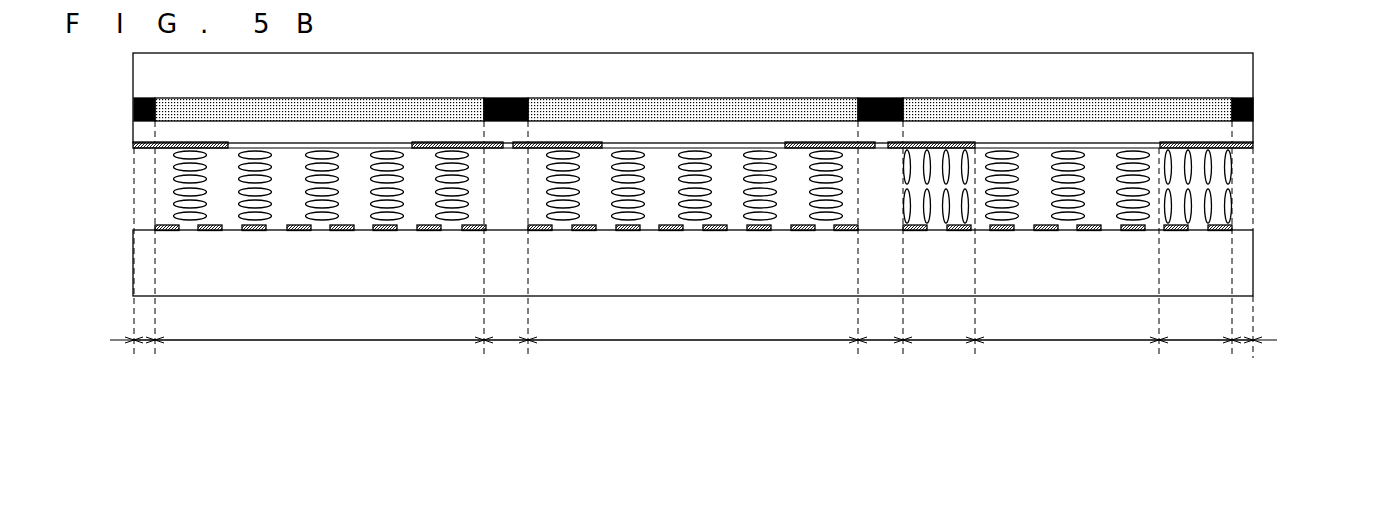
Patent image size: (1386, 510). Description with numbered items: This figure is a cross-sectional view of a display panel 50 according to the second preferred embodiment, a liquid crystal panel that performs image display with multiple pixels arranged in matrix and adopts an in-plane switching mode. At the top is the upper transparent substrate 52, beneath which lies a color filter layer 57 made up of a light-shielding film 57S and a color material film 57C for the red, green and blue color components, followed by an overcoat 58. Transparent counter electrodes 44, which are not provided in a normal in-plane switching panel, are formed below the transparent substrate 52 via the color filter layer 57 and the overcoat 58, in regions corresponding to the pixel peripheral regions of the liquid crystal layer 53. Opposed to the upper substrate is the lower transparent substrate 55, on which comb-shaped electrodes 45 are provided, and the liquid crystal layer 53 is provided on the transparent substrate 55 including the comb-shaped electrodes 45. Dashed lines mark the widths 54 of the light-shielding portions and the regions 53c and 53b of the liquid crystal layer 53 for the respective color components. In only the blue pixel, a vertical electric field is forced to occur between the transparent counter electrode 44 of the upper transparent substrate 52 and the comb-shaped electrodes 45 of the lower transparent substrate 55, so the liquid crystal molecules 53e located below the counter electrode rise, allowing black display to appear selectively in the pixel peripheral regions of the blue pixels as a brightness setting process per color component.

The display panel 50 is at (755, 40).
The transparent substrate 52 is at (1187, 53).
The color filter layer 57 is at (745, 94).
The color material film 57C is at (1198, 108).
The light-shielding film 57S is at (1257, 110).
The overcoat 58 is at (1245, 135).
The transparent counter electrodes 44 is at (1248, 146).
The liquid crystal layer 53 is at (737, 215).
The liquid crystal molecules 53e is at (1225, 206).
The horizontal alignment region 53c is at (657, 327).
The vertical alignment region 53b is at (1067, 327).
The comb-shaped electrodes 45 is at (1233, 227).
The transparent substrate 55 is at (1245, 280).
The light shielding region 54 is at (143, 342).